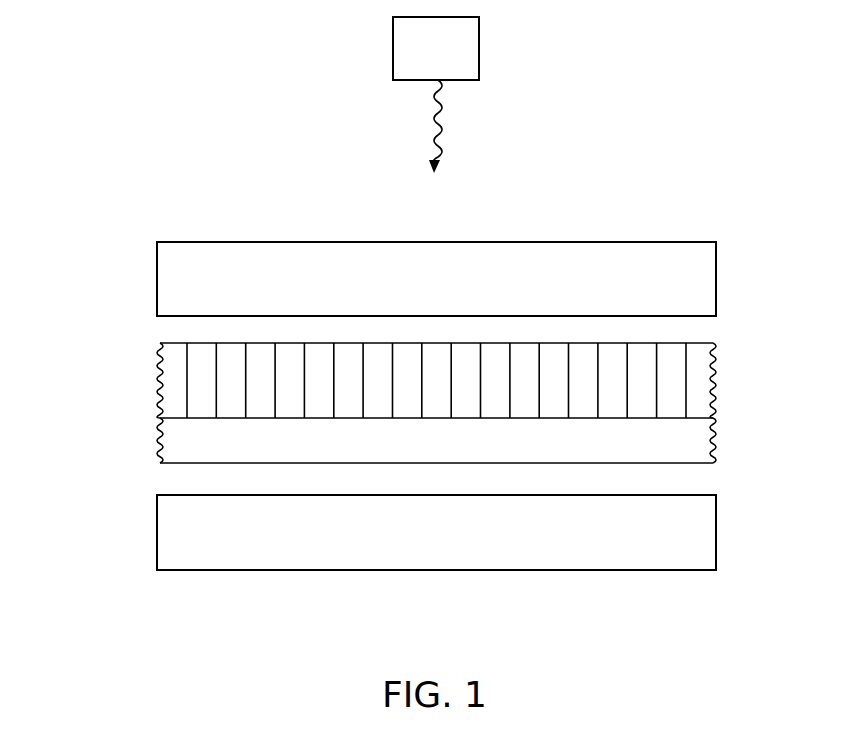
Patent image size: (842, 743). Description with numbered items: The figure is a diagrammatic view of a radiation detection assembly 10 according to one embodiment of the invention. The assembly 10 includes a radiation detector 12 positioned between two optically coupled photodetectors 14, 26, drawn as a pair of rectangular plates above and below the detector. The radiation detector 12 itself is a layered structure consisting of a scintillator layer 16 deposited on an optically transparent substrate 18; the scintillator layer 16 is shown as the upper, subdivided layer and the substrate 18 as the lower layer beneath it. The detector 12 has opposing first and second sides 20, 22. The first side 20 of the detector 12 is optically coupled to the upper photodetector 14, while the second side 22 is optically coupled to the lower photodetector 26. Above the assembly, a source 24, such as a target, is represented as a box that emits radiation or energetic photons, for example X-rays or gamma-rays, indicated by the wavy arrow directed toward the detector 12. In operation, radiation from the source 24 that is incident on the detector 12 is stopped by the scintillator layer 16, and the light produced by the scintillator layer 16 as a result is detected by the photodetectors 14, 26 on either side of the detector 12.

The radiation detection assembly 10 is at (637, 101).
The radiation detector 12 is at (410, 405).
The photodetector 14 is at (580, 242).
The scintillator layer 16 is at (713, 384).
The optically transparent substrate 18 is at (713, 441).
The first side 20 is at (177, 342).
The second side 22 is at (177, 464).
The source 24 is at (479, 55).
The photodetector 26 is at (388, 571).